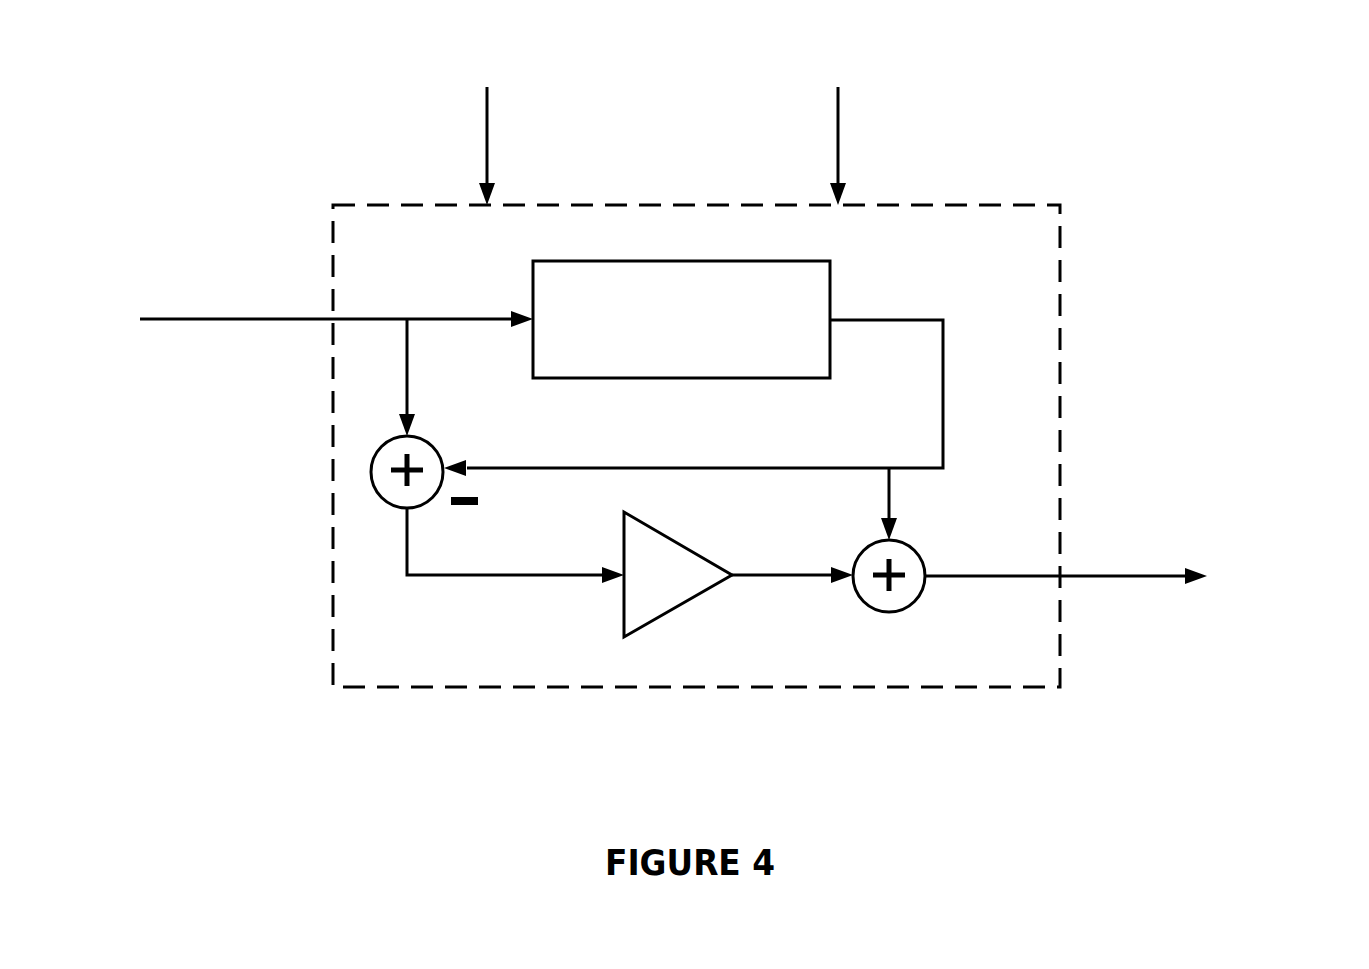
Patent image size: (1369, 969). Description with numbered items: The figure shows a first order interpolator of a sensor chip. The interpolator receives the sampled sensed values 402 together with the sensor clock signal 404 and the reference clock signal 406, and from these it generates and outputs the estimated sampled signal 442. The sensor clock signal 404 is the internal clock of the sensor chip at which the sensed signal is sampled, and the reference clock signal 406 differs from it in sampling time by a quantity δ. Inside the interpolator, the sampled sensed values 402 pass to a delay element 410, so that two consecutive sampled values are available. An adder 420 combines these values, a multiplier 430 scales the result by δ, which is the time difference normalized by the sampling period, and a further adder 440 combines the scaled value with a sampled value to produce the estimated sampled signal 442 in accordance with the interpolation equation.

The sampled sensed values 402 is at (332, 326).
The sensor clock signal 404 is at (489, 112).
The reference clock signal 406 is at (833, 113).
The delay element 410 is at (661, 347).
The adder 420 is at (393, 495).
The multiplier 430 is at (658, 597).
The adder 440 is at (888, 596).
The estimated sampled signal 442 is at (1136, 540).